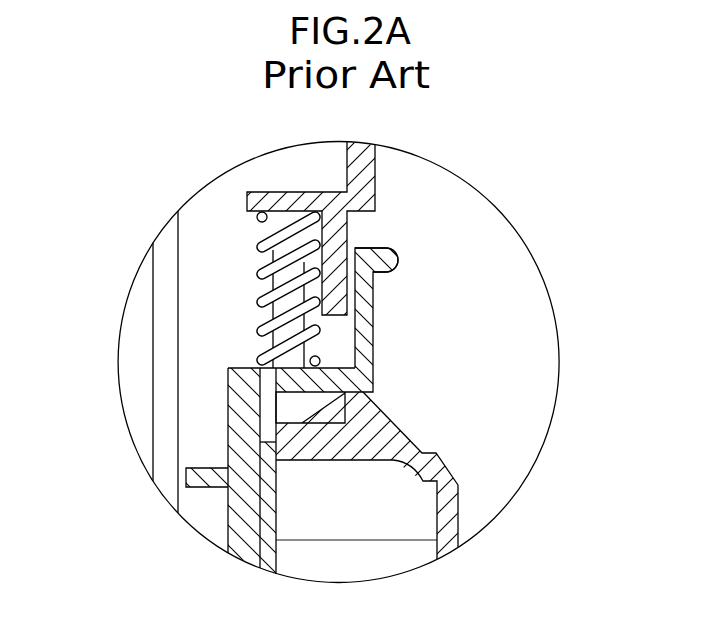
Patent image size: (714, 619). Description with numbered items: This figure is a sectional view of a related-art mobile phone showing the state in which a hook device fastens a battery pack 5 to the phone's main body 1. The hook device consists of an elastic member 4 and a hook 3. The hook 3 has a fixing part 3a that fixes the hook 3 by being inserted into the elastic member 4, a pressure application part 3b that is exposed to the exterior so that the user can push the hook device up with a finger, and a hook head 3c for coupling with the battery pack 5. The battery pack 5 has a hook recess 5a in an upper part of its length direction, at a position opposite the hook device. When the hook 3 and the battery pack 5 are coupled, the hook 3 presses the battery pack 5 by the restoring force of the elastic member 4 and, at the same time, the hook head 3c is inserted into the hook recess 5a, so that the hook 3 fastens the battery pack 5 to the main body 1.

The valve body 1 is at (370, 172).
The hook 3 is at (442, 320).
The fixing part 3a is at (283, 333).
The pressure application part 3b is at (375, 327).
The hook head 3c is at (292, 405).
The elastic member 4 is at (262, 240).
The battery pack 5 is at (448, 475).
The hook recess 5a is at (306, 424).